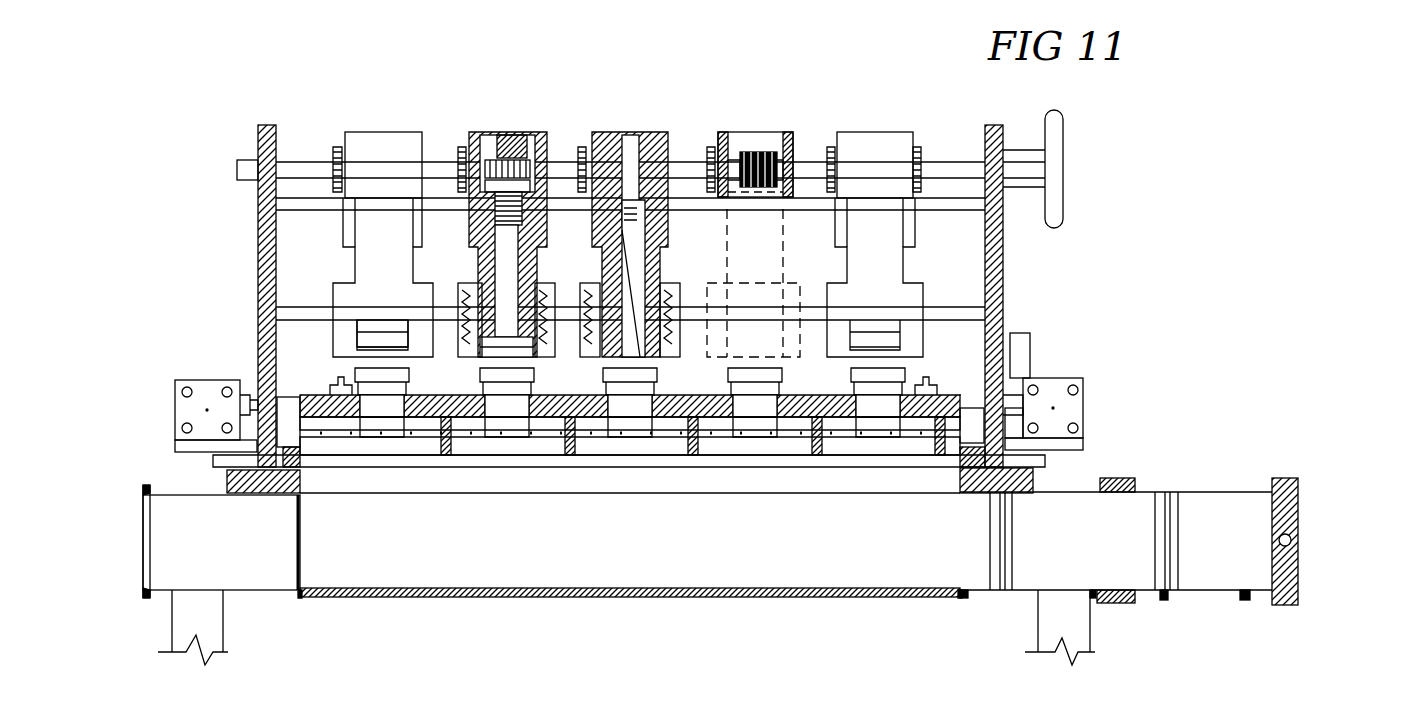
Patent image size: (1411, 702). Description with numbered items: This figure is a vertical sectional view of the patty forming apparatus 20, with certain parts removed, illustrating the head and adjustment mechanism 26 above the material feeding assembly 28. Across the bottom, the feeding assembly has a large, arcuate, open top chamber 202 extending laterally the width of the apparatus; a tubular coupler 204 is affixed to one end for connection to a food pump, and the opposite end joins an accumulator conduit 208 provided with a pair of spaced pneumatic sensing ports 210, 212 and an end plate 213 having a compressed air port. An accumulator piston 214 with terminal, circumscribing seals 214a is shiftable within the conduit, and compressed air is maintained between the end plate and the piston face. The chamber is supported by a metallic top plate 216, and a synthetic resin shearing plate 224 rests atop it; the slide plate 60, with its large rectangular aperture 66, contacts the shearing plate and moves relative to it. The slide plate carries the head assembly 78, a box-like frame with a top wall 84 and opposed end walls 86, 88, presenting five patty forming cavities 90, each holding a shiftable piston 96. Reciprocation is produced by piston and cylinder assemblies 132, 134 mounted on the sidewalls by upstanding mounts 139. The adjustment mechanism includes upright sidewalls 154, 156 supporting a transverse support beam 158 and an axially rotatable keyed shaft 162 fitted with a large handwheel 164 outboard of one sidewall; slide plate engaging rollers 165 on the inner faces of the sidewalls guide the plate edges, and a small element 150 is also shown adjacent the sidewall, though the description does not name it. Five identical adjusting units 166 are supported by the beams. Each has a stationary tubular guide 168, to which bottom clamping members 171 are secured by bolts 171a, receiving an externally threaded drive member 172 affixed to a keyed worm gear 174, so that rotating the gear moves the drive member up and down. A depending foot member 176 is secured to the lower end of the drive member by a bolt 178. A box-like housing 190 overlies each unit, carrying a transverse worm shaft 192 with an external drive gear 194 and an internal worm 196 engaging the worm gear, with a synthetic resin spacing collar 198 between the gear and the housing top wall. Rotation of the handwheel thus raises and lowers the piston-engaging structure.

The patty forming apparatus 20 is at (1100, 173).
The adjustment mechanism 26 is at (410, 100).
The material feeding assembly 28 is at (612, 607).
The slide plate 60 is at (305, 470).
The aperture 66 is at (393, 485).
The head assembly 78 is at (928, 398).
The top wall 84 is at (480, 393).
The end wall 86 is at (358, 392).
The end wall 88 is at (1030, 433).
The patty forming cavity 90 is at (830, 465).
The shiftable piston 96 is at (795, 342).
The piston and cylinder assembly 132 is at (175, 402).
The piston and cylinder assembly 134 is at (1035, 421).
The upstanding mount 139 is at (175, 434).
The stop block 150 is at (1028, 342).
The sidewall 154 is at (267, 256).
The sidewall 156 is at (1000, 253).
The support beam 158 is at (1000, 282).
The keyed shaft 162 is at (944, 152).
The handwheel 164 is at (1055, 112).
The slide plate engaging roller 165 is at (280, 388).
The adjusting unit 166 is at (333, 114).
The tubular guide 168 is at (373, 273).
The bottom clamping member 171 is at (640, 357).
The bolt 171a is at (490, 420).
The drive member 172 is at (518, 132).
The worm gear 174 is at (483, 247).
The foot member 176 is at (373, 340).
The bolt 178 is at (615, 132).
The housing 190 is at (398, 134).
The worm shaft 192 is at (805, 135).
The drive gear 194 is at (707, 132).
The worm 196 is at (778, 130).
The spacing collar 198 is at (527, 132).
The chamber 202 is at (460, 602).
The tubular coupler 204 is at (160, 598).
The accumulator conduit 208 is at (1218, 488).
The pneumatic sensing port 210 is at (1140, 605).
The pneumatic sensing port 212 is at (1253, 605).
The end plate 213 is at (1300, 502).
The accumulator piston 214 is at (1100, 596).
The seal 214a is at (1200, 492).
The top plate 216 is at (1030, 485).
The shearing plate 224 is at (945, 468).